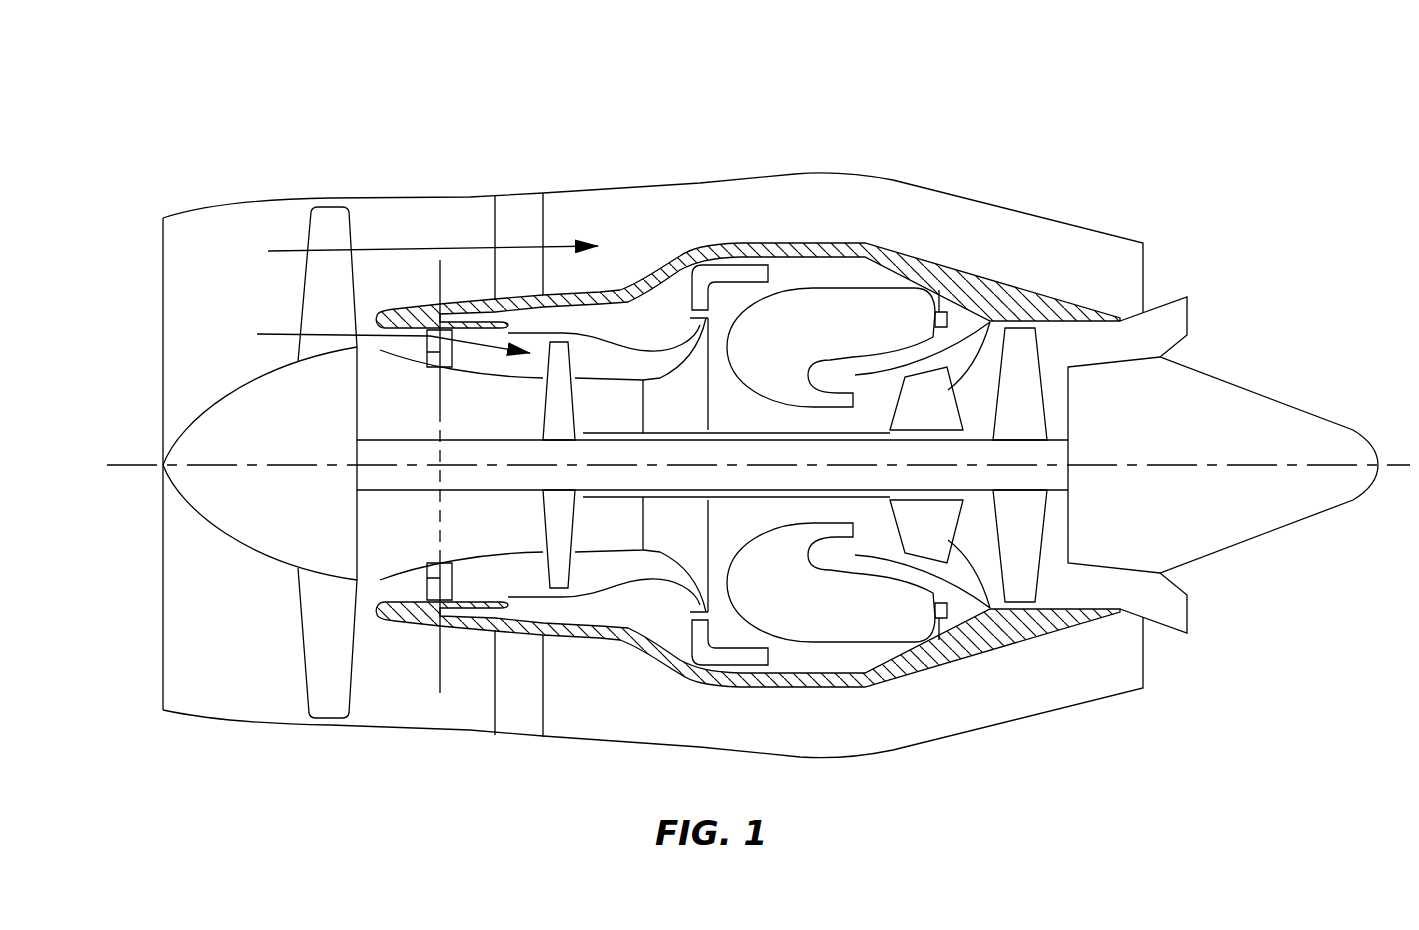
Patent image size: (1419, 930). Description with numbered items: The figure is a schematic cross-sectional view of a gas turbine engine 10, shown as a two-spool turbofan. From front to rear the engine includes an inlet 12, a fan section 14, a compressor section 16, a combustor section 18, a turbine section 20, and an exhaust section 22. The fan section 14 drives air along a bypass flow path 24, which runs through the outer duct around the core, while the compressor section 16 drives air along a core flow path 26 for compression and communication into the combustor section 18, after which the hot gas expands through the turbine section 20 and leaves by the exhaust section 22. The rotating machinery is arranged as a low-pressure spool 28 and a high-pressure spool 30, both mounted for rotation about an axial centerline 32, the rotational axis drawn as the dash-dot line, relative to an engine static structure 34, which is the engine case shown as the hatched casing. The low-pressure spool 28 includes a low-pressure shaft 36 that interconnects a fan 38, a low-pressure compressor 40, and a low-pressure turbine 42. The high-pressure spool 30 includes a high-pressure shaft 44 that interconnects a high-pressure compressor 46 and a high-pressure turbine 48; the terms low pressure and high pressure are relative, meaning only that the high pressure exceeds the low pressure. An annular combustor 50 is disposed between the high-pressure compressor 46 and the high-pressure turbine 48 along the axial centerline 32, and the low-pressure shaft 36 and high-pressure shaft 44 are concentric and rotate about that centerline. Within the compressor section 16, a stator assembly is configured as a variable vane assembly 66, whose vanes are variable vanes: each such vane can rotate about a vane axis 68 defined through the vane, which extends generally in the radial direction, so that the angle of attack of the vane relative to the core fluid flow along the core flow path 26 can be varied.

The gas turbine engine 10 is at (1243, 188).
The inlet 12 is at (200, 307).
The fan section 14 is at (320, 193).
The compressor section 16 is at (627, 323).
The combustor section 18 is at (828, 278).
The turbine section 20 is at (987, 345).
The exhaust section 22 is at (1197, 340).
The bypass flow path 24 is at (427, 247).
The core flow path 26 is at (328, 332).
The low-pressure spool 28 is at (533, 500).
The high-pressure spool 30 is at (723, 508).
The axial centerline 32 is at (1405, 468).
The engine static structure 34 is at (927, 270).
The low-pressure shaft 36 is at (430, 478).
The fan 38 is at (322, 676).
The low-pressure compressor 40 is at (557, 540).
The low-pressure turbine 42 is at (1025, 385).
The high-pressure shaft 44 is at (757, 498).
The high-pressure compressor 46 is at (680, 393).
The high-pressure turbine 48 is at (930, 535).
The annular combustor 50 is at (805, 610).
The variable vane assembly 66 is at (422, 377).
The vane axis 68 is at (437, 398).